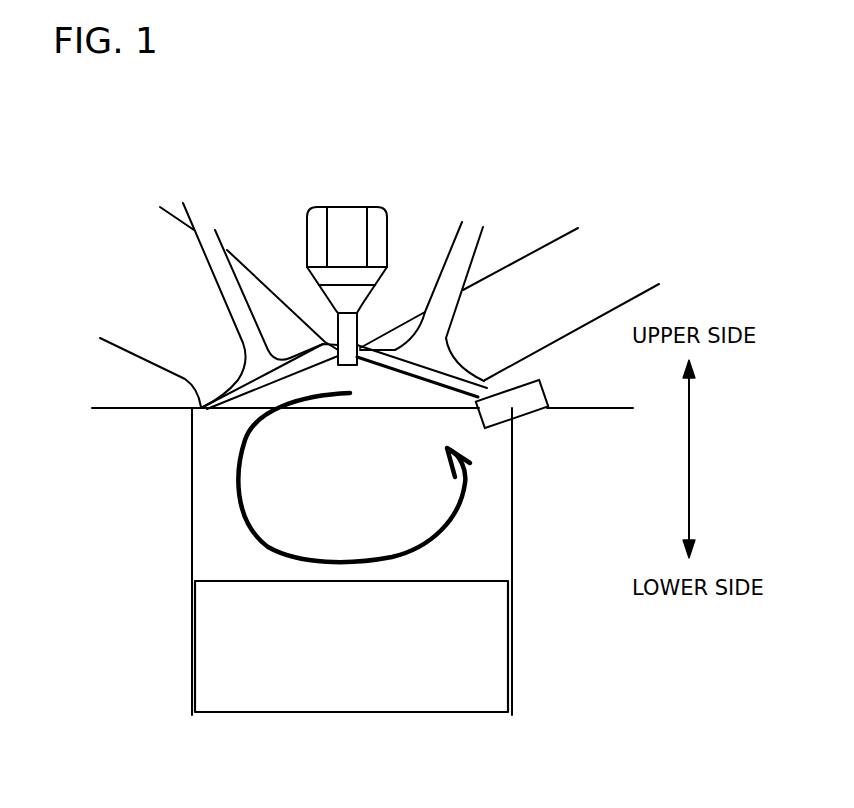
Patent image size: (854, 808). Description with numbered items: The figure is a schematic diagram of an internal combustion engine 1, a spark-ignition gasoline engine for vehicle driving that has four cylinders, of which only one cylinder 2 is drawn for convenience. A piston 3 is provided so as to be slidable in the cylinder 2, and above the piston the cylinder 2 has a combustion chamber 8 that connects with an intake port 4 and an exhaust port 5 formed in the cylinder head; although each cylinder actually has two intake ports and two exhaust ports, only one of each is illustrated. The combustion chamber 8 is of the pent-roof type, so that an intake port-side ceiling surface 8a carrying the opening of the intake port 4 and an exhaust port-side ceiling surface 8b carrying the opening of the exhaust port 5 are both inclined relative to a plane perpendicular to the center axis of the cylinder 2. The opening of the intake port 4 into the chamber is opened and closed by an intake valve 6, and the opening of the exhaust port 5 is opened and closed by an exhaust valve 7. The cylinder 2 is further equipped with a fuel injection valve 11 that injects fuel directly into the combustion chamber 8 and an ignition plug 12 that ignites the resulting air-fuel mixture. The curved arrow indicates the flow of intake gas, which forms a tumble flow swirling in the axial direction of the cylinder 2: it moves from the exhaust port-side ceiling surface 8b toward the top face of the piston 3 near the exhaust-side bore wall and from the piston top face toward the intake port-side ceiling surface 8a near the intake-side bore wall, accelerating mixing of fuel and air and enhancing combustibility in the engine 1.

The internal combustion engine 1 is at (130, 167).
The cylinder 2 is at (129, 626).
The piston 3 is at (483, 652).
The intake port 4 is at (545, 277).
The exhaust port 5 is at (135, 323).
The intake valve 6 is at (458, 252).
The exhaust valve 7 is at (215, 247).
The combustion chamber 8 is at (372, 392).
The intake port-side ceiling surface 8a is at (440, 388).
The exhaust port-side ceiling surface 8b is at (247, 392).
The fuel injection valve 11 is at (525, 407).
The ignition plug 12 is at (347, 223).